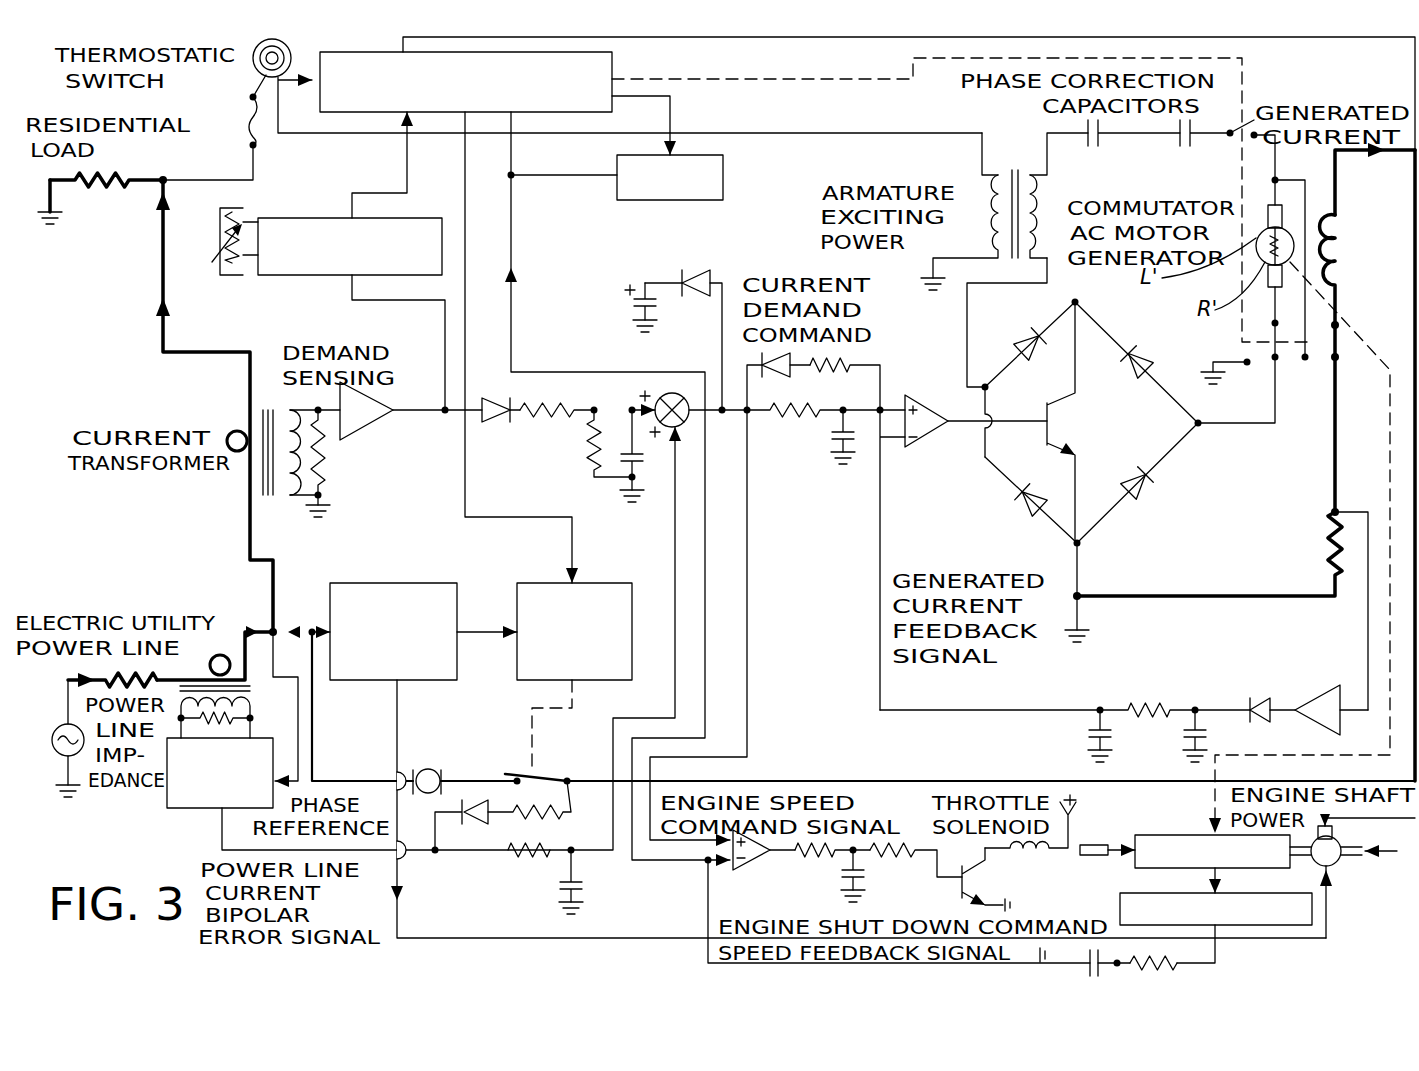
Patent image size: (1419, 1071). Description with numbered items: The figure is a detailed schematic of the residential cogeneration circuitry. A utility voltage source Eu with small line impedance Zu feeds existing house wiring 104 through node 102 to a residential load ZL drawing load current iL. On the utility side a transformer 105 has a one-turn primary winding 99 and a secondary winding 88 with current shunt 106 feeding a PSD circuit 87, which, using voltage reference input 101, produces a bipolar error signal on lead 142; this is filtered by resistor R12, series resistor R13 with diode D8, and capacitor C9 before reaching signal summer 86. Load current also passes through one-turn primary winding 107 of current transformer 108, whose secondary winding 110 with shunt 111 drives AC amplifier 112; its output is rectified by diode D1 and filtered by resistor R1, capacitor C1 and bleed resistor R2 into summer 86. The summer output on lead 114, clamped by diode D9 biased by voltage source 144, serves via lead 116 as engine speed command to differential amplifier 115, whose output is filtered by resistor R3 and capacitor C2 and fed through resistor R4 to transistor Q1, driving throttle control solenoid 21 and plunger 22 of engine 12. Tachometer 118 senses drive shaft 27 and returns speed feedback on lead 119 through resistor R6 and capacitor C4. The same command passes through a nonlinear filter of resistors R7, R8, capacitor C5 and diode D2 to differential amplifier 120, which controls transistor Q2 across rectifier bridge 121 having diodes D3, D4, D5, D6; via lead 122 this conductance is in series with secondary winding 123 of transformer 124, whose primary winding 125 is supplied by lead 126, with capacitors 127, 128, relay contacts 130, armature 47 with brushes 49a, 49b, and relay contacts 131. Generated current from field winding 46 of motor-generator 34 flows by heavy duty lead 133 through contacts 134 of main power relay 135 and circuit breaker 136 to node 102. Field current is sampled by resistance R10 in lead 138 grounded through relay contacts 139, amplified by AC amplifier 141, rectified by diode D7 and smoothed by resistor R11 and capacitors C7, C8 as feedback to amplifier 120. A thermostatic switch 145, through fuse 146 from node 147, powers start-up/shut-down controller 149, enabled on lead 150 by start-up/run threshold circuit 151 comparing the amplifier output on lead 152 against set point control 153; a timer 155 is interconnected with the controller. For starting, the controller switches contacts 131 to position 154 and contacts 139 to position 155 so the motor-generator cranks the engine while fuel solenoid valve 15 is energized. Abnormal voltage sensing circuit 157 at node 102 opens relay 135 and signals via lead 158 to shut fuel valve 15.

The thermostatic switch 145 is at (262, 72).
The fuse 146 is at (250, 140).
The node 147 is at (168, 180).
The start-up/shut-down controller 149 is at (356, 112).
The input lead 150 is at (407, 175).
The start-up/run threshold circuit 151 is at (322, 200).
The lead 152 is at (364, 300).
The set point control 153 is at (214, 270).
The relay contact position 154 is at (511, 286).
The timer 155 is at (723, 172).
The lead 126 is at (740, 133).
The battery or voltage source 144 is at (632, 300).
The one-turn primary winding 107 is at (232, 432).
The current transformer 108 is at (270, 412).
The secondary winding 110 is at (290, 498).
The shunt 111 is at (325, 458).
The AC amplifier 112 is at (368, 424).
The house wiring 104 is at (248, 505).
The node 102 is at (276, 608).
The one-turn primary winding 99 is at (224, 654).
The transformer 105 is at (257, 688).
The voltage reference input 101 is at (302, 722).
The current shunt 106 is at (252, 720).
The secondary winding 88 is at (250, 702).
The PSD circuit 87 is at (208, 808).
The output lead 142 is at (222, 845).
The abnormal voltage sensing circuit 157 is at (380, 583).
The lead 158 is at (400, 730).
The main power relay 135 is at (598, 583).
The circuit breaker 136 is at (432, 770).
The relay contacts 134 is at (540, 775).
The signal summer 86 is at (684, 394).
The output lead 114 is at (706, 418).
The lead 116 is at (748, 680).
The differential amplifier 120 is at (920, 440).
The full-wave diode rectifier bridge 121 is at (1132, 436).
The lead 122 is at (966, 352).
The secondary winding 123 is at (1044, 204).
The transformer 124 is at (994, 178).
The primary winding 125 is at (992, 230).
The capacitor 127 is at (1100, 148).
The capacitor 128 is at (1192, 150).
The relay contacts 130 is at (1243, 125).
The relay contacts 131 is at (1278, 362).
The lead 138 is at (1333, 465).
The relay contacts 139 is at (1338, 352).
The AC amplifier 141 is at (1328, 676).
The motor-generator 34 is at (1318, 176).
The field winding 46 is at (1345, 258).
The armature 47 is at (1262, 256).
The brush 49a is at (1266, 212).
The brush 49b is at (1238, 311).
The heavy duty lead 133 is at (935, 778).
The differential amplifier 115 is at (750, 864).
The engine 12 is at (1196, 835).
The drive shaft 27 is at (1214, 814).
The movable plunger 22 is at (1092, 845).
The throttle control solenoid 21 is at (1034, 862).
The fuel solenoid valve 15 is at (1338, 862).
The tachometer 118 is at (1312, 908).
The lead 119 is at (1285, 958).
The diode D1 is at (495, 422).
The diode D2 is at (786, 374).
The bridge diode D3 is at (1024, 334).
The bridge diode D4 is at (1150, 486).
The bridge diode D5 is at (1014, 506).
The bridge diode D6 is at (1150, 352).
The diode D7 is at (1262, 694).
The diode D8 is at (474, 822).
The clamping diode D9 is at (688, 268).
The resistor R1 is at (542, 404).
The resistor R2 is at (588, 445).
The resistor R3 is at (838, 866).
The resistor R4 is at (896, 858).
The resistor R6 is at (1180, 958).
The resistor R7 is at (780, 418).
The resistor R8 is at (846, 372).
The resistance R10 is at (1330, 552).
The resistor R11 is at (1164, 700).
The resistor R12 is at (532, 866).
The resistor R13 is at (556, 810).
The capacitor C1 is at (648, 465).
The capacitor C2 is at (870, 870).
The capacitor C4 is at (1110, 956).
The capacitor C5 is at (830, 448).
The capacitor C7 is at (1088, 728).
The capacitor C8 is at (1182, 730).
The capacitor C9 is at (590, 888).
The NPN transistor Q1 is at (975, 876).
The NPN transistor Q2 is at (1040, 410).
The residential load impedance ZL is at (115, 178).
The power line impedance Zu is at (140, 668).
The utility voltage source Eu is at (52, 734).
The load current iL is at (118, 286).